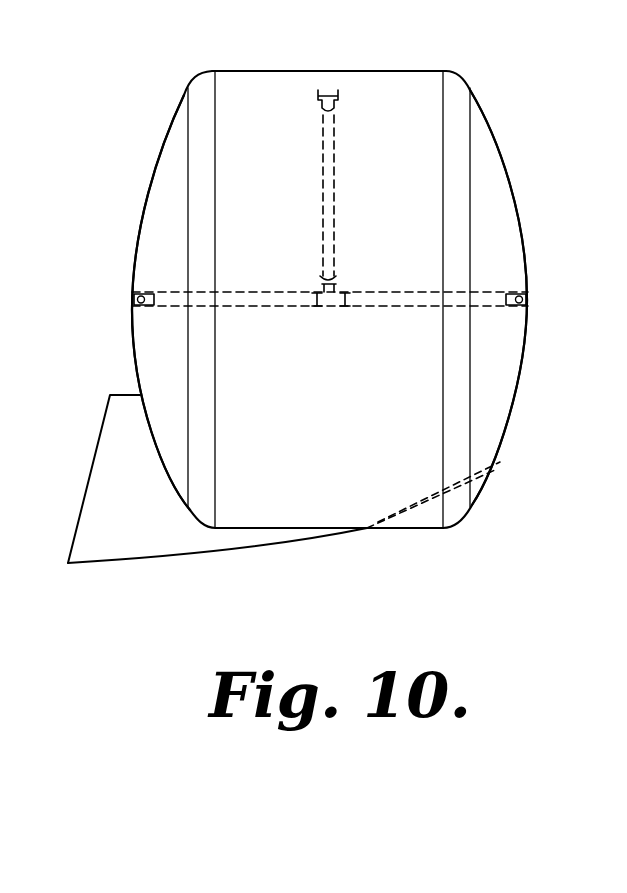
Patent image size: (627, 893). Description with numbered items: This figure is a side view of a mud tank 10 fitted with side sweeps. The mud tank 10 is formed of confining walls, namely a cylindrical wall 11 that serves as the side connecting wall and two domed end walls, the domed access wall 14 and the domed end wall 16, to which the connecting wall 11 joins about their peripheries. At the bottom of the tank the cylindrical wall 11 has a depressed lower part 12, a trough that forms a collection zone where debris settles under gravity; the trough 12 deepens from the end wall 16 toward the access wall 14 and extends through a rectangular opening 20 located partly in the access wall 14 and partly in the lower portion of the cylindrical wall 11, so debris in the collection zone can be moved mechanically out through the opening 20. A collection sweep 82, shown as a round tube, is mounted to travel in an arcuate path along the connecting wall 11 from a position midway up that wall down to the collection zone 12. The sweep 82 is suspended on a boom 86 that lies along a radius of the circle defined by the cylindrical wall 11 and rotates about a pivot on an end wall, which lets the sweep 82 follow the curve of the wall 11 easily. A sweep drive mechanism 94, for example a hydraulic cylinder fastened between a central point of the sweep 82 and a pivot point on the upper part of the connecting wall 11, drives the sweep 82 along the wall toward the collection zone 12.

The mud tank 10 is at (524, 458).
The cylindrical wall 11 is at (408, 530).
The depressed lower part 12 is at (262, 548).
The domed access wall 14 is at (136, 223).
The domed end wall 16 is at (524, 228).
The rectangular opening 20 is at (118, 524).
The collection sweep 82 is at (425, 298).
The boom 86 is at (130, 300).
The sweep drive mechanism 94 is at (336, 222).